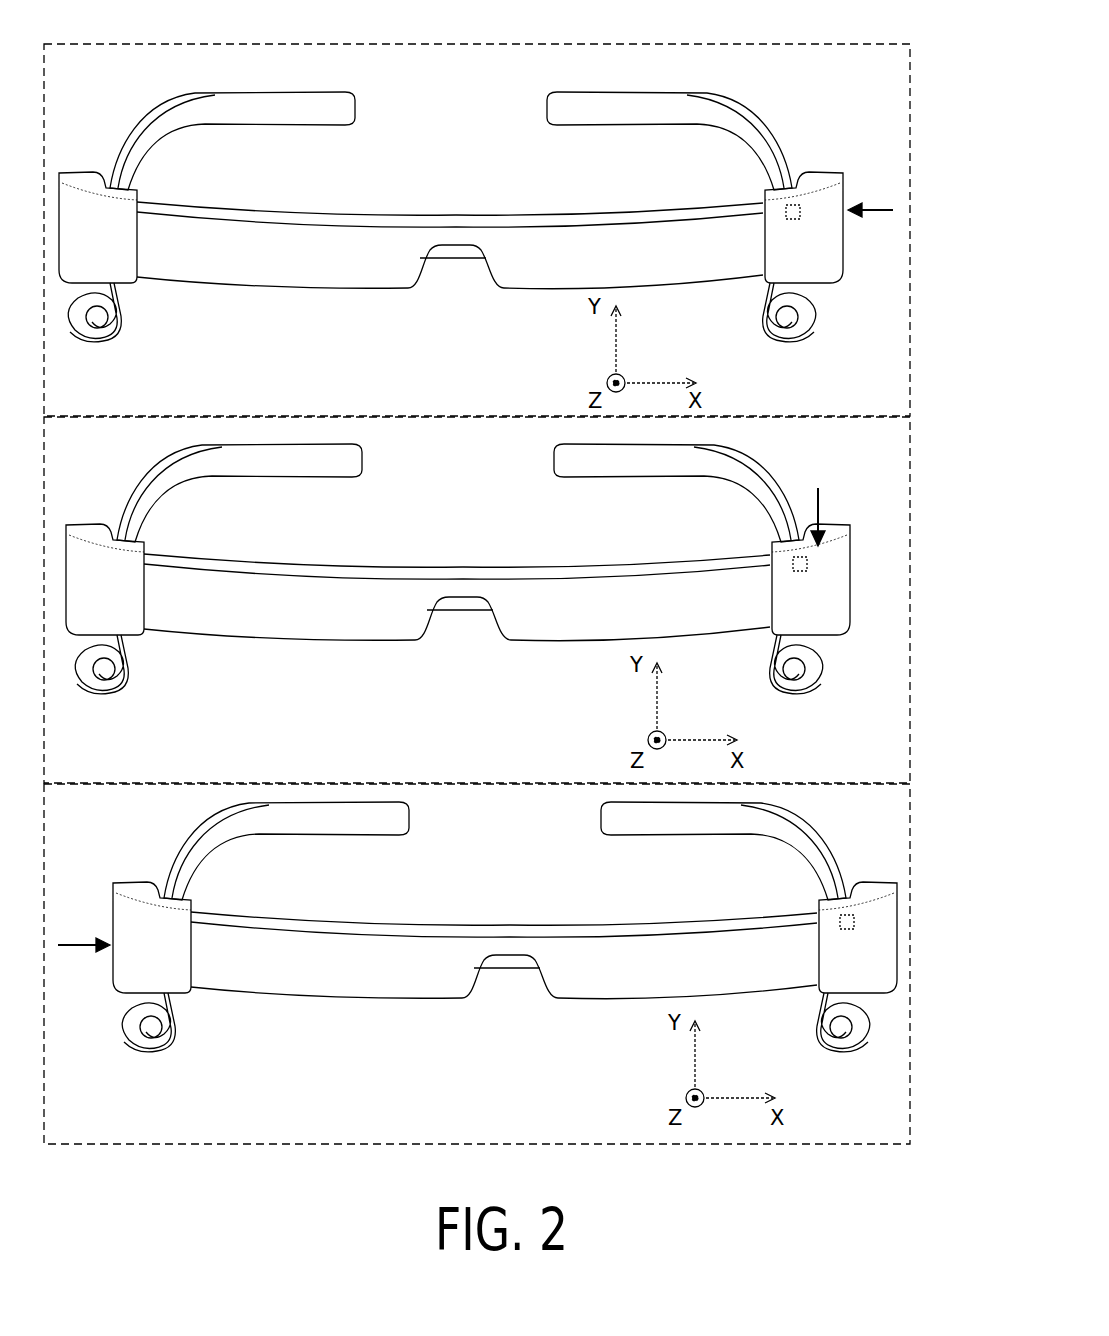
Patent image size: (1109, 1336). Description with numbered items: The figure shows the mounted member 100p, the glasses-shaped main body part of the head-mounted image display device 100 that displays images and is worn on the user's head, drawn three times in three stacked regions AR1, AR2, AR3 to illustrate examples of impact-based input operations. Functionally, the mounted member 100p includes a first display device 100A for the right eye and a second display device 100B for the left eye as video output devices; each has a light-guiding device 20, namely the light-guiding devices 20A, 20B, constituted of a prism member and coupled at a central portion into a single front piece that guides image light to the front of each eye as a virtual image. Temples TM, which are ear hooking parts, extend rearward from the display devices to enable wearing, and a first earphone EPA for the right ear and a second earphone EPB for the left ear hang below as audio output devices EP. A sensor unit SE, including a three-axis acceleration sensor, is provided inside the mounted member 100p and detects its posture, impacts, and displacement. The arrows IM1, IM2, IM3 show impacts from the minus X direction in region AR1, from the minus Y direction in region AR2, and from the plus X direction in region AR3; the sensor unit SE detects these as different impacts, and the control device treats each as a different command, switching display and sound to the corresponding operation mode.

The image display device 100 is at (480, 581).
The mounted member 100p is at (480, 587).
The first display device 100A is at (180, 300).
The second display device 100B is at (720, 300).
The light-guiding device 20 is at (477, 636).
The light-guiding device 20A is at (278, 266).
The light-guiding device 20B is at (550, 266).
The temple TM is at (305, 113).
The sensor unit SE is at (800, 208).
The arrow IM1 is at (872, 200).
The arrow IM2 is at (822, 509).
The arrow IM3 is at (78, 935).
The audio output device EP is at (481, 691).
The first earphone EPA is at (95, 326).
The second earphone EPB is at (790, 322).
The region AR1 is at (920, 72).
The region AR2 is at (920, 440).
The region AR3 is at (922, 812).